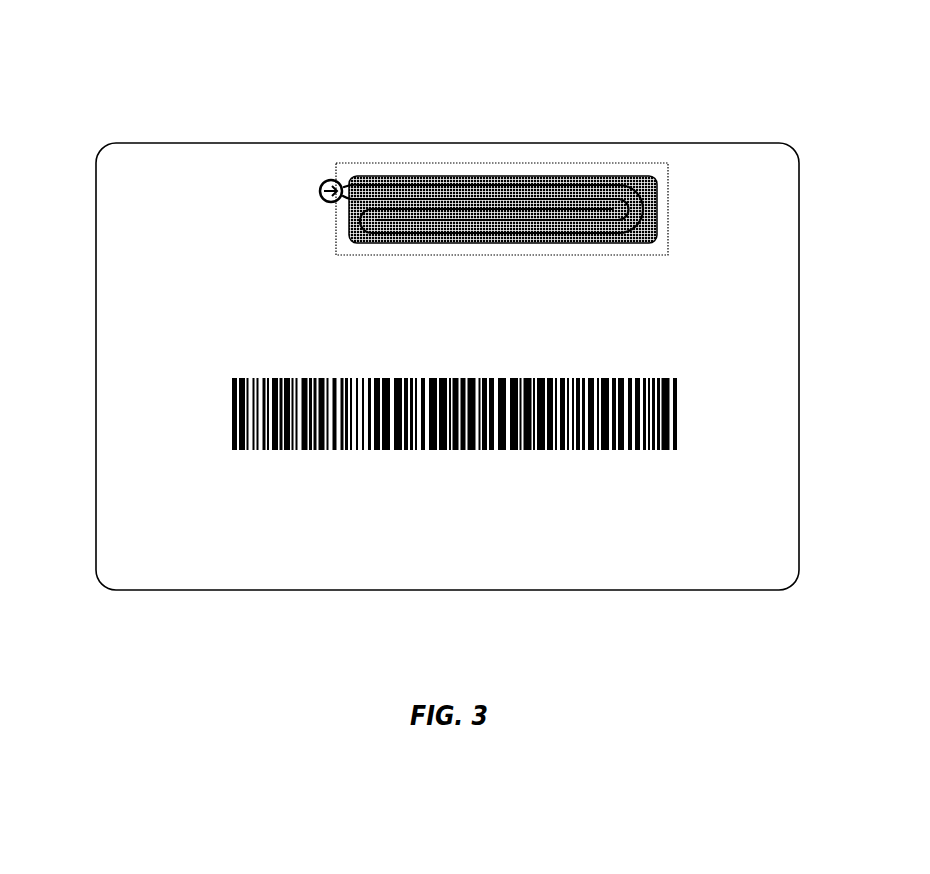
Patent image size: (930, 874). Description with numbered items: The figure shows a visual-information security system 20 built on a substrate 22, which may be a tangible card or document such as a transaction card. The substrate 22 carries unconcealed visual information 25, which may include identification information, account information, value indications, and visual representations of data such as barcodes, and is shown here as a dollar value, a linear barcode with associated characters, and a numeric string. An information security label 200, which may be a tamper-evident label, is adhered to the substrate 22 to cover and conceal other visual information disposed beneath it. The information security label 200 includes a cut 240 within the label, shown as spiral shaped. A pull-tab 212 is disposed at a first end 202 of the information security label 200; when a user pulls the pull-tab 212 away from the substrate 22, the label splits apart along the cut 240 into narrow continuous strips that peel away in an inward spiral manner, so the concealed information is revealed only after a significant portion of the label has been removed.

The visual-information security system 20 is at (187, 88).
The substrate 22 is at (108, 203).
The unconcealed visual information 25 is at (743, 172).
The information security label 200 is at (492, 190).
The first end 202 is at (318, 195).
The pull-tab 212 is at (327, 181).
The cut 240 is at (623, 196).